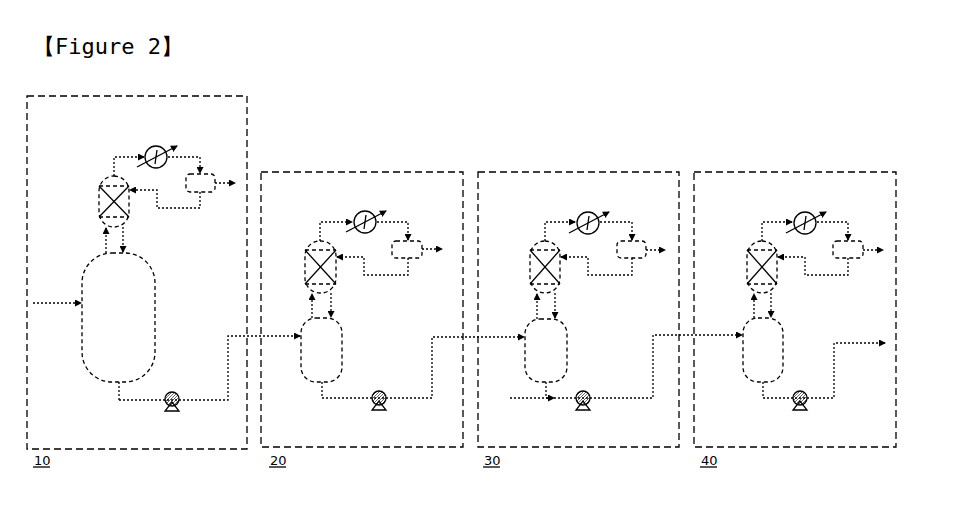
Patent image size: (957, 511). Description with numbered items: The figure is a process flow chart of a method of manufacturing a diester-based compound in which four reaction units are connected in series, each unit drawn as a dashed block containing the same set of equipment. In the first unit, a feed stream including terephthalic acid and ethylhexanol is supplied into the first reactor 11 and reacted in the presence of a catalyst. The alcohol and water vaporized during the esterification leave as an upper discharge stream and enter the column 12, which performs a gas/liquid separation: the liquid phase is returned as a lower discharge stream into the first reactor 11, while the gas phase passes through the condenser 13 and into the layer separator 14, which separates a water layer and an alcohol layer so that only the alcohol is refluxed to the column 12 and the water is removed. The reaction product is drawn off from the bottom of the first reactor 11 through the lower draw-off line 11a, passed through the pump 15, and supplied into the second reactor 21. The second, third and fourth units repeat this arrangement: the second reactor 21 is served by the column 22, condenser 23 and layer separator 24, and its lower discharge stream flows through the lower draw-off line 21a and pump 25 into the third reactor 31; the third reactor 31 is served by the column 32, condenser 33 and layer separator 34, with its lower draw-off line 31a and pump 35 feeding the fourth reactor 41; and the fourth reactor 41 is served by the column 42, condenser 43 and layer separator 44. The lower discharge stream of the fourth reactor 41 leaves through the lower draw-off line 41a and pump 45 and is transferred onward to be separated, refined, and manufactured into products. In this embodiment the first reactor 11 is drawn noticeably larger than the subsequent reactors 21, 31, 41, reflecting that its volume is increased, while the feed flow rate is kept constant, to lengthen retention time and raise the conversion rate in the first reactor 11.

The first reactor 11 is at (118, 317).
The lower draw-off line 11a is at (115, 388).
The column 12 is at (98, 190).
The condenser 13 is at (147, 149).
The layer separator 14 is at (206, 173).
The pump 15 is at (178, 410).
The second reactor 21 is at (321, 350).
The lower draw-off line 21a is at (320, 388).
The column 22 is at (305, 264).
The condenser 23 is at (355, 214).
The layer separator 24 is at (414, 240).
The pump 25 is at (385, 409).
The third reactor 31 is at (546, 350).
The lower draw-off line 31a is at (543, 389).
The column 32 is at (530, 264).
The condenser 33 is at (578, 215).
The layer separator 34 is at (637, 240).
The pump 35 is at (590, 409).
The fourth reactor 41 is at (763, 350).
The lower draw-off line 41a is at (760, 389).
The column 42 is at (747, 264).
The condenser 43 is at (795, 215).
The layer separator 44 is at (855, 240).
The pump 45 is at (806, 409).